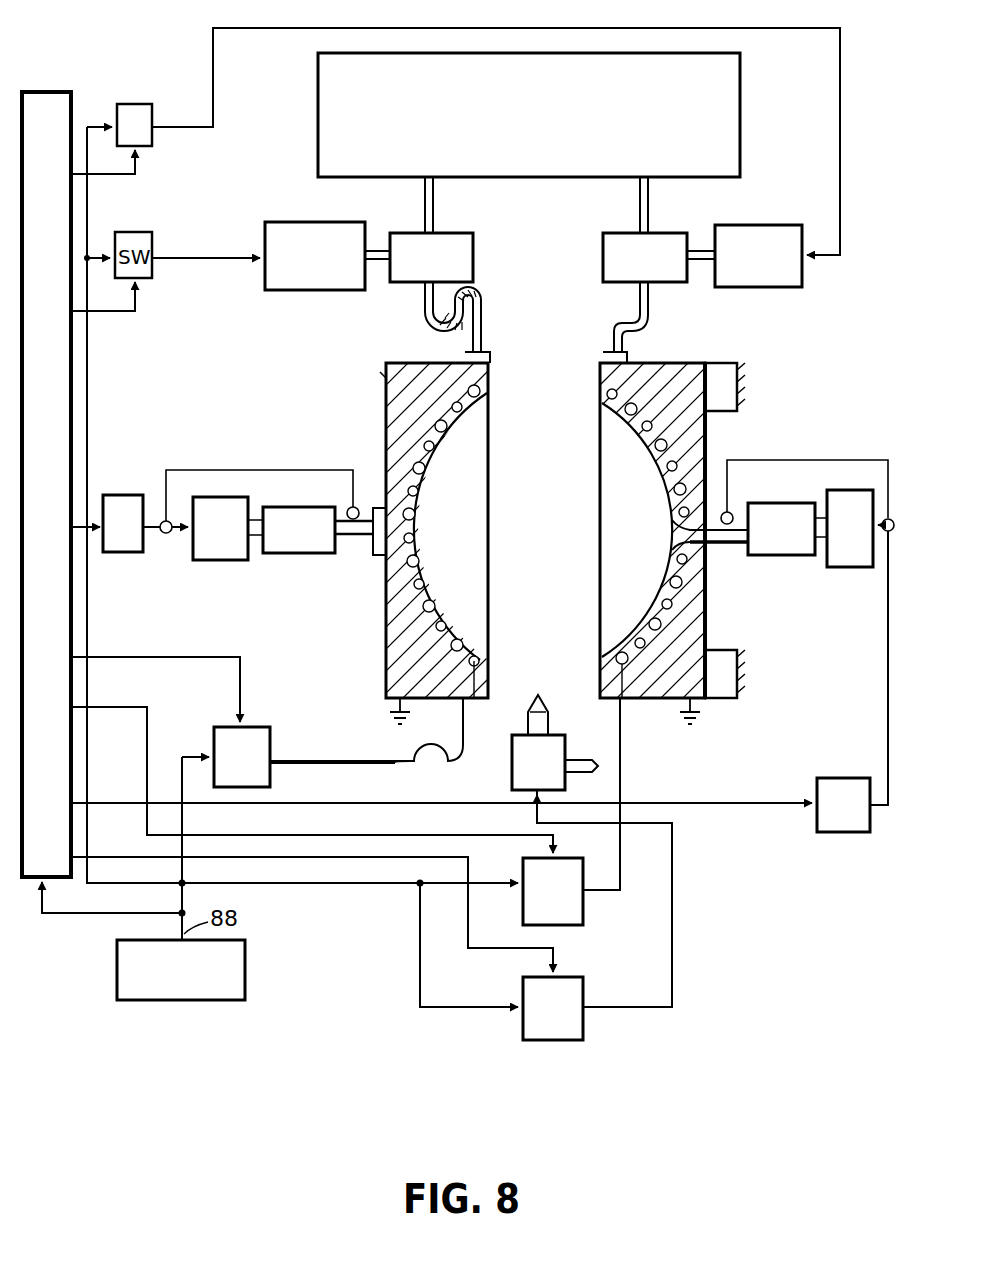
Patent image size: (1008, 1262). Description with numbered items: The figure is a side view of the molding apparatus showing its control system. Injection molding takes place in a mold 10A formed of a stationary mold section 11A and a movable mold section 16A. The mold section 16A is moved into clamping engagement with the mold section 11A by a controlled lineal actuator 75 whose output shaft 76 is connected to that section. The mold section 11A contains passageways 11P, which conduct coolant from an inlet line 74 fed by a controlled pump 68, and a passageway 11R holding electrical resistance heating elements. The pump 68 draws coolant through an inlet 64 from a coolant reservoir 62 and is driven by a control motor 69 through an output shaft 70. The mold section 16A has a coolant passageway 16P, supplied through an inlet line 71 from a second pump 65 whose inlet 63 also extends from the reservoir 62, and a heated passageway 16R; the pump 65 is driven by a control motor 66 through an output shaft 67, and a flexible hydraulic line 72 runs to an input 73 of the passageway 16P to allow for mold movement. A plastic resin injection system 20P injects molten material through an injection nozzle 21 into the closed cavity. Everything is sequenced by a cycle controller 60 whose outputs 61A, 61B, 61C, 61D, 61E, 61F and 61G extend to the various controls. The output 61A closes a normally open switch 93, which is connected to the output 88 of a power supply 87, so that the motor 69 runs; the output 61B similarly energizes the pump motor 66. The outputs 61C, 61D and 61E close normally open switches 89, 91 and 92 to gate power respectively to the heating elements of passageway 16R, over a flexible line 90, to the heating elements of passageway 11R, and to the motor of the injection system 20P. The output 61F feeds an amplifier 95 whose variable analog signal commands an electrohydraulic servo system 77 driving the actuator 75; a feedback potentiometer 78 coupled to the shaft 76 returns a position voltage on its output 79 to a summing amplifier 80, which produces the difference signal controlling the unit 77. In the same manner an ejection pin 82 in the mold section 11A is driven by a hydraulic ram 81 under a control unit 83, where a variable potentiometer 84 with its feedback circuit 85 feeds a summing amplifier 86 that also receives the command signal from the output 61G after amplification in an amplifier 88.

The cycle controller 60 is at (54, 100).
The first output 61A is at (126, 180).
The second output 61B is at (126, 322).
The controller output 61C is at (185, 657).
The controller output 61D is at (132, 707).
The controller output 61E is at (296, 885).
The controller output 61F is at (92, 530).
The sixth output 61G is at (136, 803).
The coolant reservoir 62 is at (740, 74).
The inlet 63 is at (434, 210).
The inlet 64 is at (638, 207).
The pump 65 is at (470, 245).
The control motor 66 is at (294, 222).
The output shaft 67 is at (376, 240).
The pump 68 is at (602, 279).
The control motor 69 is at (788, 234).
The output shaft 70 is at (694, 246).
The inlet line 71 is at (424, 306).
The flexible hydraulic line 72 is at (480, 310).
The input 73 is at (482, 356).
The inlet line 74 is at (638, 322).
The controlled lineal actuator 75 is at (290, 553).
The output shaft 76 is at (360, 538).
The electrohydraulic servo system 77 is at (214, 560).
The feedback potentiometer 78 is at (353, 506).
The output 79 is at (258, 470).
The summing amplifier 80 is at (164, 518).
The hydraulic ram 81 is at (780, 555).
The ejection pin 82 is at (712, 546).
The control unit 83 is at (844, 567).
The variable potentiometer 84 is at (732, 512).
The feedback circuit 85 is at (770, 460).
The summing amplifier 86 is at (892, 522).
The power supply 87 is at (246, 963).
The amplifier 88 is at (840, 778).
The normally open switch 89 is at (266, 728).
The flexible line 90 is at (358, 762).
The normally open switch 91 is at (580, 924).
The normally open switch 92 is at (524, 1019).
The normally open switch 93 is at (463, 141).
The amplifier 95 is at (120, 495).
The mold 10A is at (708, 708).
The mold section 11A is at (688, 365).
The passageways 11P is at (650, 646).
The passageway 11R is at (618, 662).
The mold section 16A is at (386, 370).
The passageway 16P is at (480, 391).
The passageway 16R is at (479, 654).
The plastic resin injection system 20P is at (514, 776).
The injection nozzle 21 is at (543, 722).